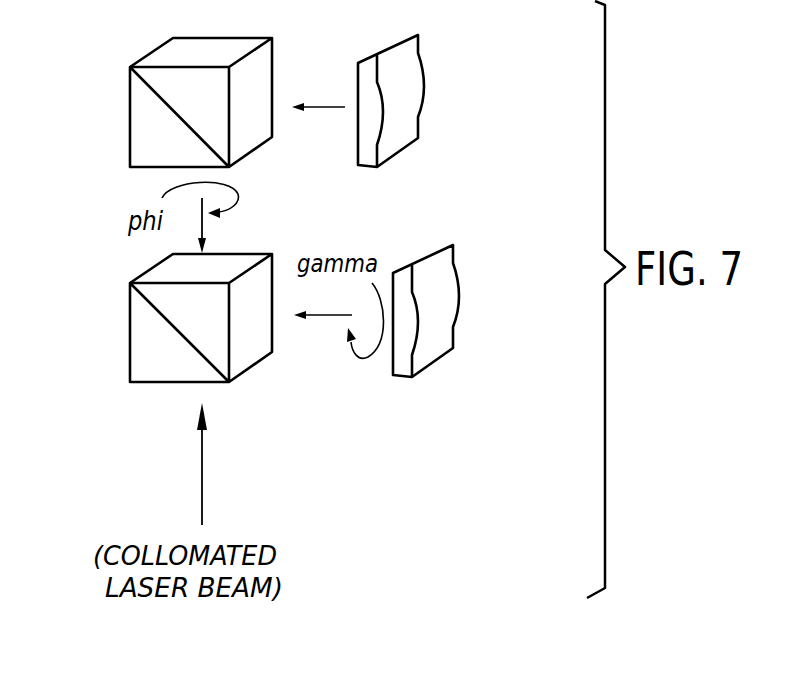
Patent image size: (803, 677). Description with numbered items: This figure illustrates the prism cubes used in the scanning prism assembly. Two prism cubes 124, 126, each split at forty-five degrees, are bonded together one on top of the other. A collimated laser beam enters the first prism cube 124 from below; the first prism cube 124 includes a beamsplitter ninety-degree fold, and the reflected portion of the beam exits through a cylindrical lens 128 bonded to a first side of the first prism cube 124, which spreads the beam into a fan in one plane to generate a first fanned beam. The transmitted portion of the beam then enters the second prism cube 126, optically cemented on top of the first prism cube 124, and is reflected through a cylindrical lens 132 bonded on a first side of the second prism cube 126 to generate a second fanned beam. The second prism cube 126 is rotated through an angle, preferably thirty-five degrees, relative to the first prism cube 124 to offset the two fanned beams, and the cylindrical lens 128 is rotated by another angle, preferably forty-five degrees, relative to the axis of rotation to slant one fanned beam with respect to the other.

The first prism cube 124 is at (122, 330).
The second prism cube 126 is at (122, 104).
The cylindrical lens 128 is at (475, 265).
The cylindrical lens 132 is at (444, 66).